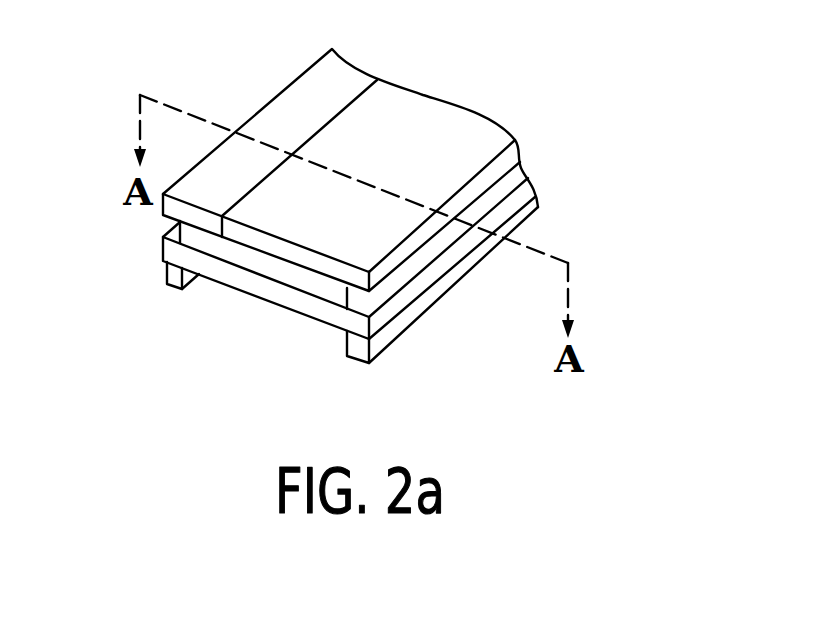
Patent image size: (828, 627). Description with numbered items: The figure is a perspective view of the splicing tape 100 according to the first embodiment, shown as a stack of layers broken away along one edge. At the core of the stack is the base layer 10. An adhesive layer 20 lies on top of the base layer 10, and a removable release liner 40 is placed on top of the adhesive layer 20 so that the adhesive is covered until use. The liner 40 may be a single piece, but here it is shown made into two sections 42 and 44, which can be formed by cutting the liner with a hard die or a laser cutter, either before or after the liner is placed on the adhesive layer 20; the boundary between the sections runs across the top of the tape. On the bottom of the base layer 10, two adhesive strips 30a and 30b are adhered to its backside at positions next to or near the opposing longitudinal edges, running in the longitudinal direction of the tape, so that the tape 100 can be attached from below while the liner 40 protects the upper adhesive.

The base layer 10 is at (163, 252).
The adhesive layer 20 is at (192, 232).
The adhesive strip 30a is at (172, 283).
The adhesive strip 30b is at (392, 333).
The release liner 40 is at (466, 142).
The liner section 42 is at (312, 90).
The liner section 44 is at (416, 100).
The splicing tape 100 is at (584, 237).